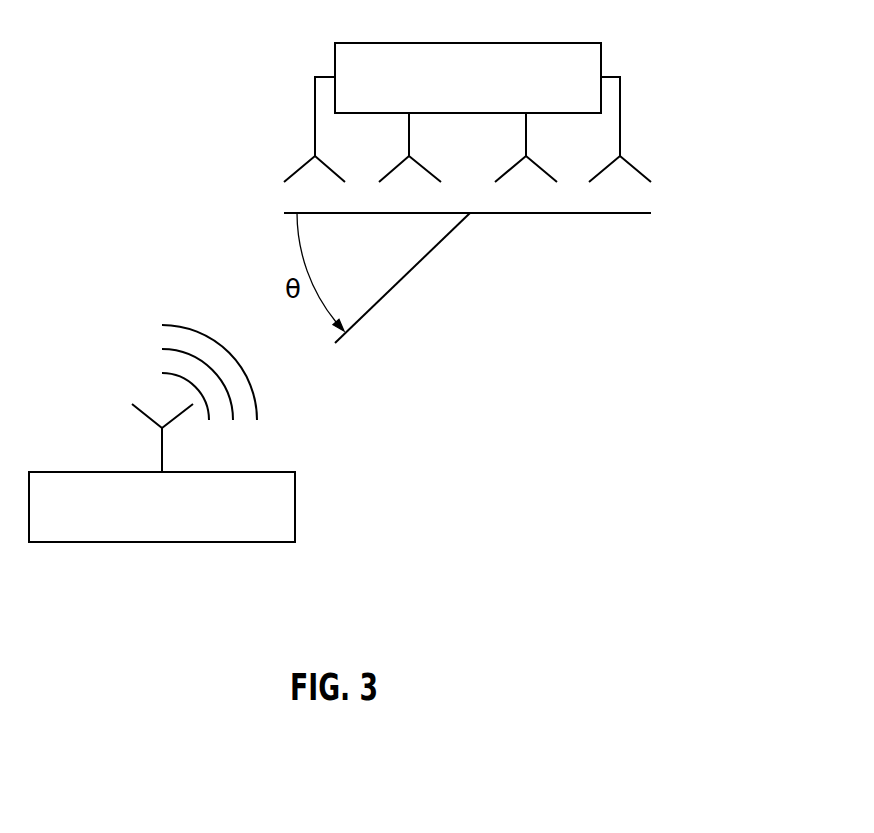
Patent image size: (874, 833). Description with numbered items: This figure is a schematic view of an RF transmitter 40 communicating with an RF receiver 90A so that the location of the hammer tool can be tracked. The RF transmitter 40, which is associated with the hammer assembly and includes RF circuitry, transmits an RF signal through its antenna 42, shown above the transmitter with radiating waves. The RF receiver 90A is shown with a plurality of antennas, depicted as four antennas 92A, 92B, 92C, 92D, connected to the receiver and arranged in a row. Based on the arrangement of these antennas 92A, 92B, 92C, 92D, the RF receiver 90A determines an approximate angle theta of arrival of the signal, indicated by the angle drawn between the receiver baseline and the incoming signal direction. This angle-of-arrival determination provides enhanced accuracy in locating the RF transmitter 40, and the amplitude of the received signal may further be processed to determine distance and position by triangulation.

The RF receiver 90A is at (580, 43).
The antenna 92A is at (300, 169).
The antenna 92B is at (395, 167).
The antenna 92C is at (538, 167).
The antenna 92D is at (639, 171).
The antenna 42 is at (144, 414).
The RF transmitter 40 is at (275, 472).